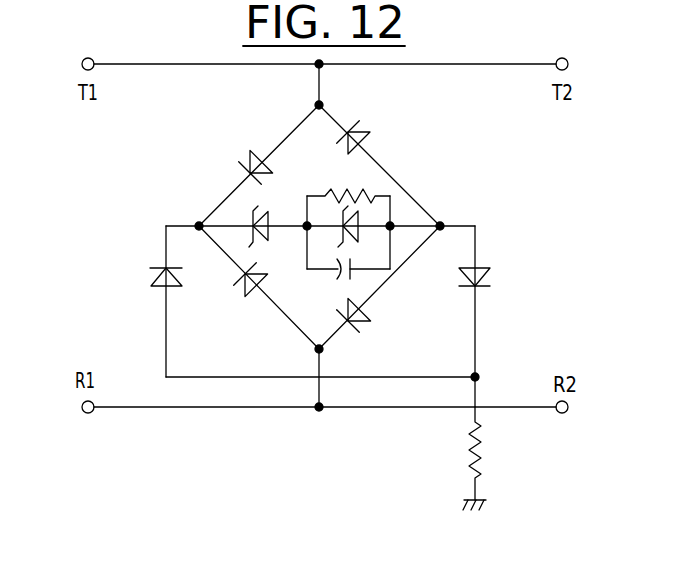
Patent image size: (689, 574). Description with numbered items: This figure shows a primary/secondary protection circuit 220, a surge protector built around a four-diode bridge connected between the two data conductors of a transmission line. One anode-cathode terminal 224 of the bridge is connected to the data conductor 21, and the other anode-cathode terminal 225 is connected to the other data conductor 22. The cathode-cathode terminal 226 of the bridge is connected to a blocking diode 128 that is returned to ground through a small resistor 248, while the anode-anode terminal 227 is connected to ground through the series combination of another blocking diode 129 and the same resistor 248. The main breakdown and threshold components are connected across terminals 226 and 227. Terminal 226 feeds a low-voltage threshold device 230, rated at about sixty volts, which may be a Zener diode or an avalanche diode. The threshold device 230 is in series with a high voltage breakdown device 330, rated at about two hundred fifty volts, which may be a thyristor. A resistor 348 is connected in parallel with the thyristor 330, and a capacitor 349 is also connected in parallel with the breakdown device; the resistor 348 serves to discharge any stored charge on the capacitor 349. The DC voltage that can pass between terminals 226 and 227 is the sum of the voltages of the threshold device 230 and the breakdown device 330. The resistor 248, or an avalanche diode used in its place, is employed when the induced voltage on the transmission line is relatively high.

The data conductor 21 is at (205, 66).
The data conductor 22 is at (497, 406).
The primary/secondary protection circuit 220 is at (190, 143).
The anode-cathode terminal 224 is at (322, 104).
The anode-cathode terminal 225 is at (323, 350).
The cathode-cathode terminal 226 is at (196, 223).
The anode-anode terminal 227 is at (441, 223).
The low-voltage threshold device 230 is at (262, 211).
The high voltage breakdown device 330 is at (371, 219).
The resistor 348 is at (348, 186).
The capacitor 349 is at (342, 282).
The blocking diode 128 is at (152, 278).
The blocking diode 129 is at (484, 281).
The resistor 248 is at (478, 475).